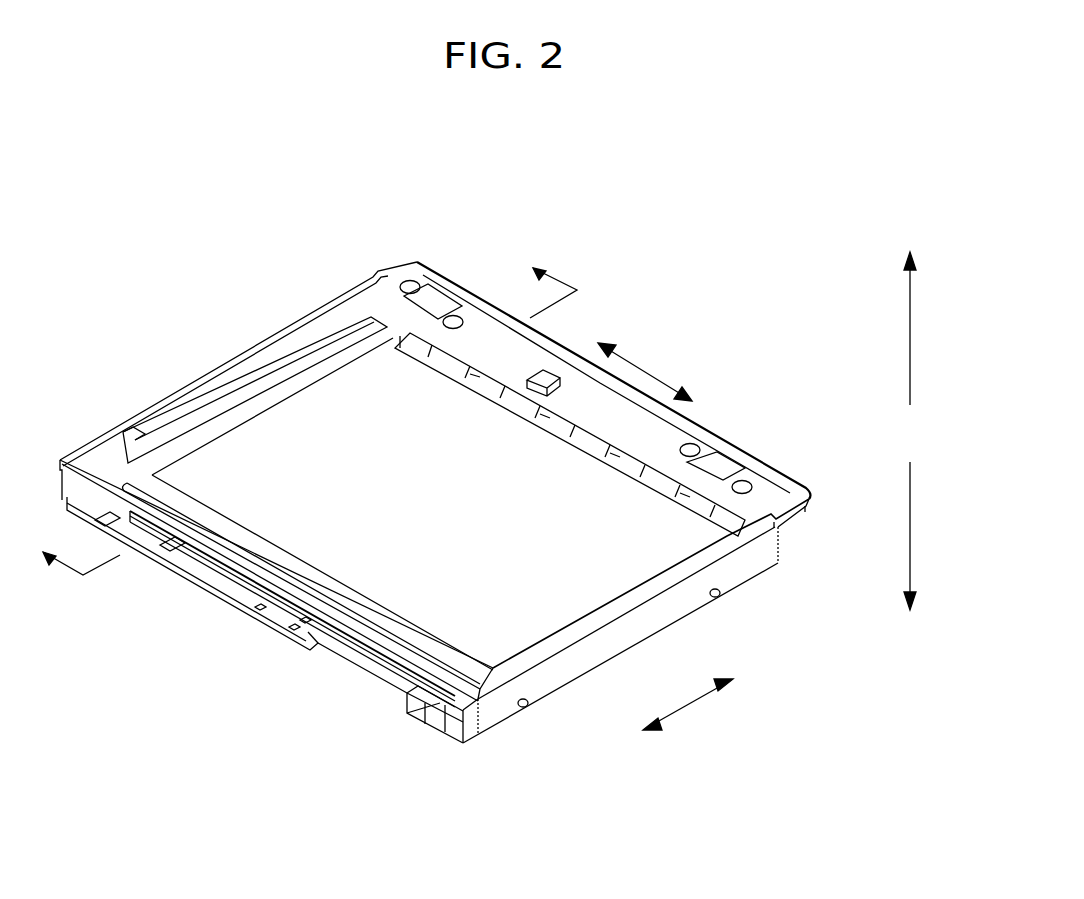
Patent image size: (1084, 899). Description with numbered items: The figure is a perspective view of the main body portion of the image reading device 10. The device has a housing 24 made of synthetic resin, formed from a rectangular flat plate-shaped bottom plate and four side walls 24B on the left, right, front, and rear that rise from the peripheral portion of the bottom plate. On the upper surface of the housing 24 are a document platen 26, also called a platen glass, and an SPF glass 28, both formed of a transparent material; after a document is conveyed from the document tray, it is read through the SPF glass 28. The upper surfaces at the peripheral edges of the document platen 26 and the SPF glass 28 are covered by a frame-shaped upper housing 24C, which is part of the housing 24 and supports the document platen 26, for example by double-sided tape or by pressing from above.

The image reading device 10 is at (181, 260).
The housing 24 is at (698, 619).
The side wall 24B is at (622, 633).
The upper housing 24C is at (720, 555).
The document platen 26 is at (528, 630).
The SPF glass 28 is at (318, 358).